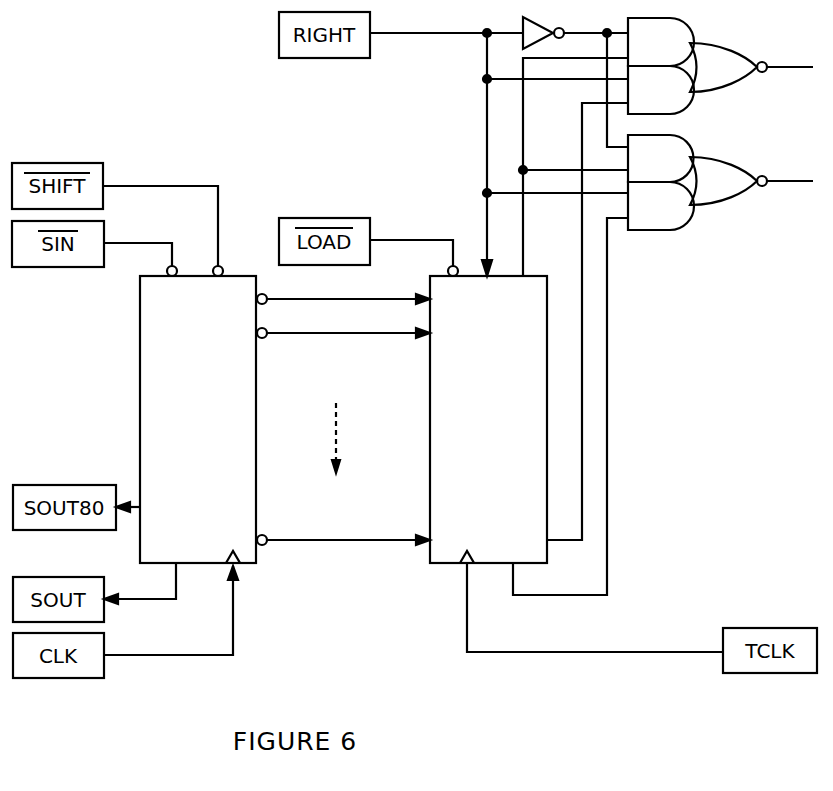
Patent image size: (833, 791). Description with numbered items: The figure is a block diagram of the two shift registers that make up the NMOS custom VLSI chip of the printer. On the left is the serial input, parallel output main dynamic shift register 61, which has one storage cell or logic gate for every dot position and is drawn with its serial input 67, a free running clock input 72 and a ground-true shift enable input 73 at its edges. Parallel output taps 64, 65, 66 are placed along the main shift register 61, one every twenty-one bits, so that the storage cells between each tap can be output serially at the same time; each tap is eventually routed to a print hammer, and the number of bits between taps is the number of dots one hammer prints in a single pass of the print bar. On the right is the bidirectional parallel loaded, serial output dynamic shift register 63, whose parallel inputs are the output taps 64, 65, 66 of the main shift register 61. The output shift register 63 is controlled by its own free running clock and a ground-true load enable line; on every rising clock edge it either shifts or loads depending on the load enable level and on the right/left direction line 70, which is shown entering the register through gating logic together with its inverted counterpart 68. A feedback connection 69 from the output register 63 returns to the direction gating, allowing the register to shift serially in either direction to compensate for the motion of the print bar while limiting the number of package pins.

The main dynamic shift register 61 is at (198, 419).
The output shift register 63 is at (488, 419).
The output tap 64 is at (278, 307).
The output tap 65 is at (278, 340).
The output tap 66 is at (278, 535).
The serial input 67 is at (180, 265).
The inverted right signal line 68 is at (517, 262).
The feedback line 69 is at (520, 566).
The right/left direction line 70 is at (481, 248).
The free running clock input 72 is at (243, 578).
The ground-true shift enable input 73 is at (225, 265).